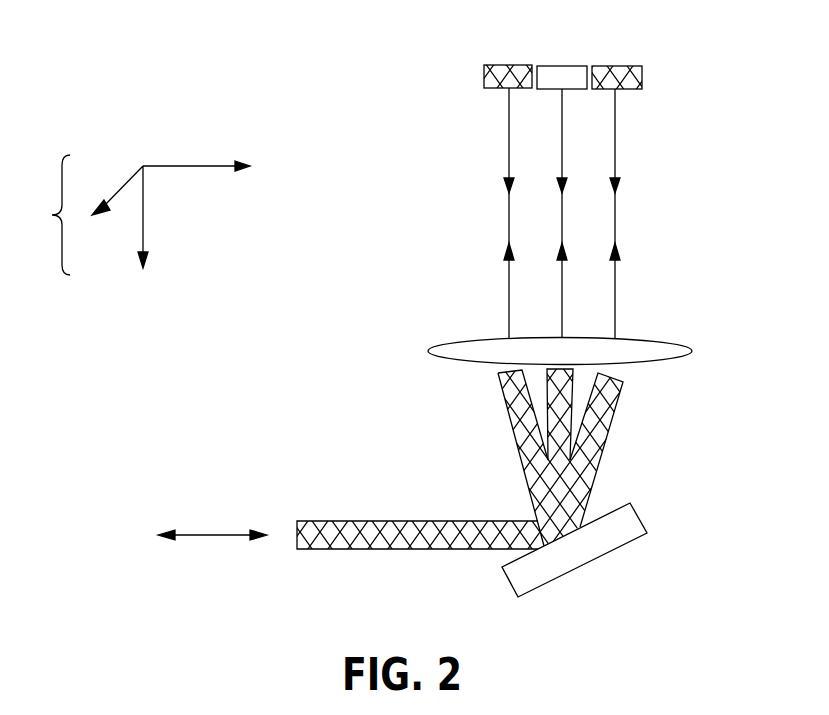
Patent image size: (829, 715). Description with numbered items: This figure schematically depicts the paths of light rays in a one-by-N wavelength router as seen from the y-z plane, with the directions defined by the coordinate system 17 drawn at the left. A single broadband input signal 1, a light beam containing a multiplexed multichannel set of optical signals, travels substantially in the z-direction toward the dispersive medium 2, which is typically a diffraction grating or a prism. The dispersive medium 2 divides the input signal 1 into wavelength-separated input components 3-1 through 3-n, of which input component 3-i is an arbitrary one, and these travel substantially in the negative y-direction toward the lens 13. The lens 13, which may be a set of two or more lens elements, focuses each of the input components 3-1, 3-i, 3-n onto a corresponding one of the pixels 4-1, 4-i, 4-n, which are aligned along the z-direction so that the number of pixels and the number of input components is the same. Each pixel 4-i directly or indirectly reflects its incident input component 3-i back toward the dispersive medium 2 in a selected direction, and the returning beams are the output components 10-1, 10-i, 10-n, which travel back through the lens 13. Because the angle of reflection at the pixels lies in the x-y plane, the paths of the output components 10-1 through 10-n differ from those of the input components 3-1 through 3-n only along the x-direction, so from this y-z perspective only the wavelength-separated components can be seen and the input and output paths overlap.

The input signal 1 is at (225, 535).
The dispersive medium 2 is at (650, 528).
The input component 3-1 is at (456, 317).
The input component 3-i is at (664, 274).
The input component 3-n is at (668, 308).
The output component 10-1 is at (508, 152).
The output component 10-i is at (562, 114).
The output component 10-n is at (615, 159).
The pixel 4-1 is at (499, 63).
The pixel 4-i is at (557, 64).
The pixel 4-n is at (612, 64).
The lens 13 is at (660, 340).
The coordinate system 17 is at (144, 215).